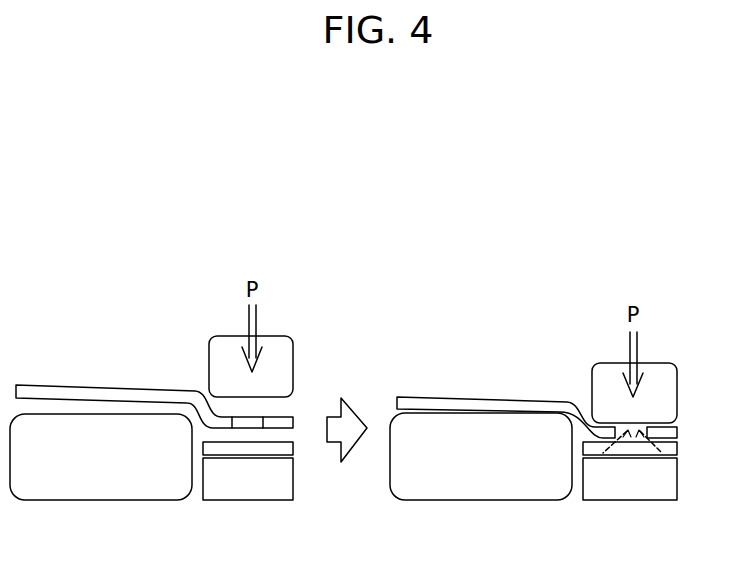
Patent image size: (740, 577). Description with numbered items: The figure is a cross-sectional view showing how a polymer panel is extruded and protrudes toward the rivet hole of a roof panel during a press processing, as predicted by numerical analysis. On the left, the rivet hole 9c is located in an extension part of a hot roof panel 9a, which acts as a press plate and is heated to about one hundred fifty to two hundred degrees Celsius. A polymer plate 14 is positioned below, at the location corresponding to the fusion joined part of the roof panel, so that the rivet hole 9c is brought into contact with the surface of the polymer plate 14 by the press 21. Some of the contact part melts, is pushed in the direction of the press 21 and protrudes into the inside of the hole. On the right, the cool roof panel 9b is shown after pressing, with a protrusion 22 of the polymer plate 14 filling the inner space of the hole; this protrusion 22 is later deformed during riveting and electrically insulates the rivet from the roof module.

The hot roof panel 9a is at (47, 390).
The cool roof panel 9b is at (462, 402).
The rivet hole 9c is at (257, 422).
The polymer plate 14 is at (247, 450).
The press 21 is at (223, 352).
The protrusion 22 is at (627, 447).